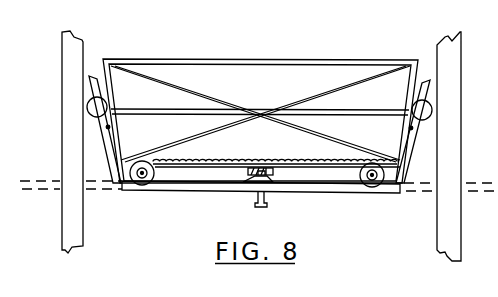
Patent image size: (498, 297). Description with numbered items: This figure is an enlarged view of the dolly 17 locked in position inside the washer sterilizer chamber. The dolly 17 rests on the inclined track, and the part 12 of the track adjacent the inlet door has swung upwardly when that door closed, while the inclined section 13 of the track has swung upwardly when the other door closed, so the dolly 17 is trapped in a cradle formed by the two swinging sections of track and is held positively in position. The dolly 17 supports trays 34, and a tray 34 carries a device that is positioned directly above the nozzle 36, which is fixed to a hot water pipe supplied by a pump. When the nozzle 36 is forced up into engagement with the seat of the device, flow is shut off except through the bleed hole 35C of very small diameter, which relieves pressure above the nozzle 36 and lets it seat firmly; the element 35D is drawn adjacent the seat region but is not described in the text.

The part of the track 12 is at (106, 145).
The inclined section of the track 13 is at (415, 130).
The dolly 17 is at (222, 163).
The trays 34 is at (303, 62).
The bleed hole 35C is at (263, 168).
The clamp nut 35D is at (252, 177).
The nozzle 36 is at (273, 178).